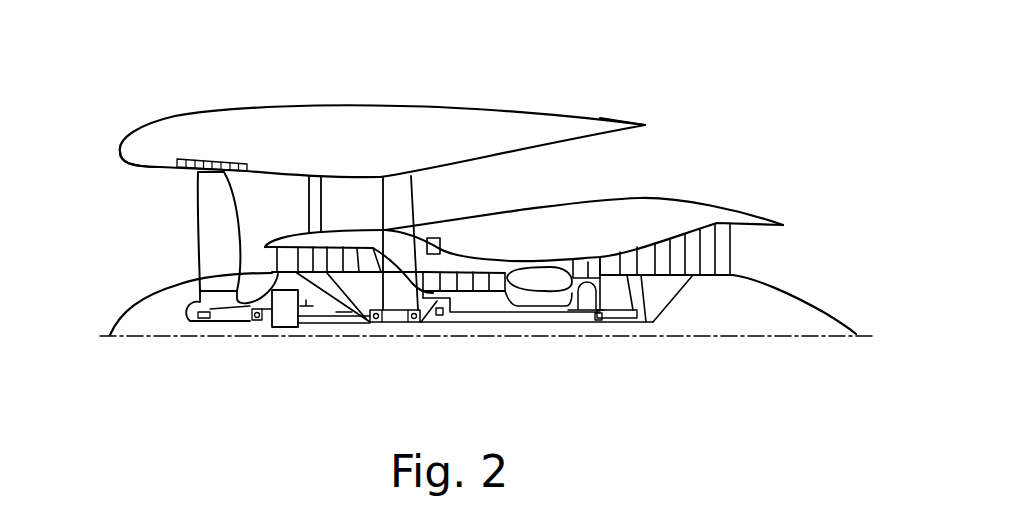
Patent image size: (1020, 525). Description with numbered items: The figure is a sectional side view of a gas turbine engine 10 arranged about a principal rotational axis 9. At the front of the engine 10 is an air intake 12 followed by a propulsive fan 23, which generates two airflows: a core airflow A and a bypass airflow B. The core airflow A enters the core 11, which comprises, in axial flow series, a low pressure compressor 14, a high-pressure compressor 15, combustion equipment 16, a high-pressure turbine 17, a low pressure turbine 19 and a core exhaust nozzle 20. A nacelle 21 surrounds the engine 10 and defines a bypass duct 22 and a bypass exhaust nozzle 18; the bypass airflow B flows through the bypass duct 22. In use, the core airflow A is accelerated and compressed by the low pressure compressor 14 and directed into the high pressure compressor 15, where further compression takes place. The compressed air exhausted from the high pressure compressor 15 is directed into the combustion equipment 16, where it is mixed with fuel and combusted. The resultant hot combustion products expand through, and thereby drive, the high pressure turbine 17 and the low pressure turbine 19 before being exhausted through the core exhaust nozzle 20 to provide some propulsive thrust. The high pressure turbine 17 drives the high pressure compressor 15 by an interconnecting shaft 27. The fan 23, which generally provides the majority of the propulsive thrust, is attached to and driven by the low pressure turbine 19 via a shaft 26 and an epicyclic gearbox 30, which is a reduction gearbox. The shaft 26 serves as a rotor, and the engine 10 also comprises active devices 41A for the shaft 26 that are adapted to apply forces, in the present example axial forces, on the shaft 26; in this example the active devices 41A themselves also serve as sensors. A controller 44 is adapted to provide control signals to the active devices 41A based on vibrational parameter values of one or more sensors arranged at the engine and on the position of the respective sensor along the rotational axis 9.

The principal rotational axis 9 is at (757, 337).
The gas turbine engine 10 is at (165, 116).
The core 11 is at (548, 240).
The air intake 12 is at (118, 184).
The low pressure compressor 14 is at (343, 257).
The high pressure compressor 15 is at (470, 282).
The combustion equipment 16 is at (543, 285).
The high pressure turbine 17 is at (590, 258).
The bypass exhaust nozzle 18 is at (747, 119).
The low pressure turbine 19 is at (707, 262).
The core exhaust nozzle 20 is at (797, 261).
The nacelle 21 is at (393, 118).
The bypass duct 22 is at (594, 161).
The propulsive fan 23 is at (203, 247).
The shaft 26 is at (433, 320).
The interconnecting shaft 27 is at (520, 312).
The epicyclic gearbox 30 is at (287, 315).
The active devices 41A is at (440, 318).
The controller 44 is at (434, 237).
The core airflow A is at (250, 260).
The bypass airflow B is at (250, 212).